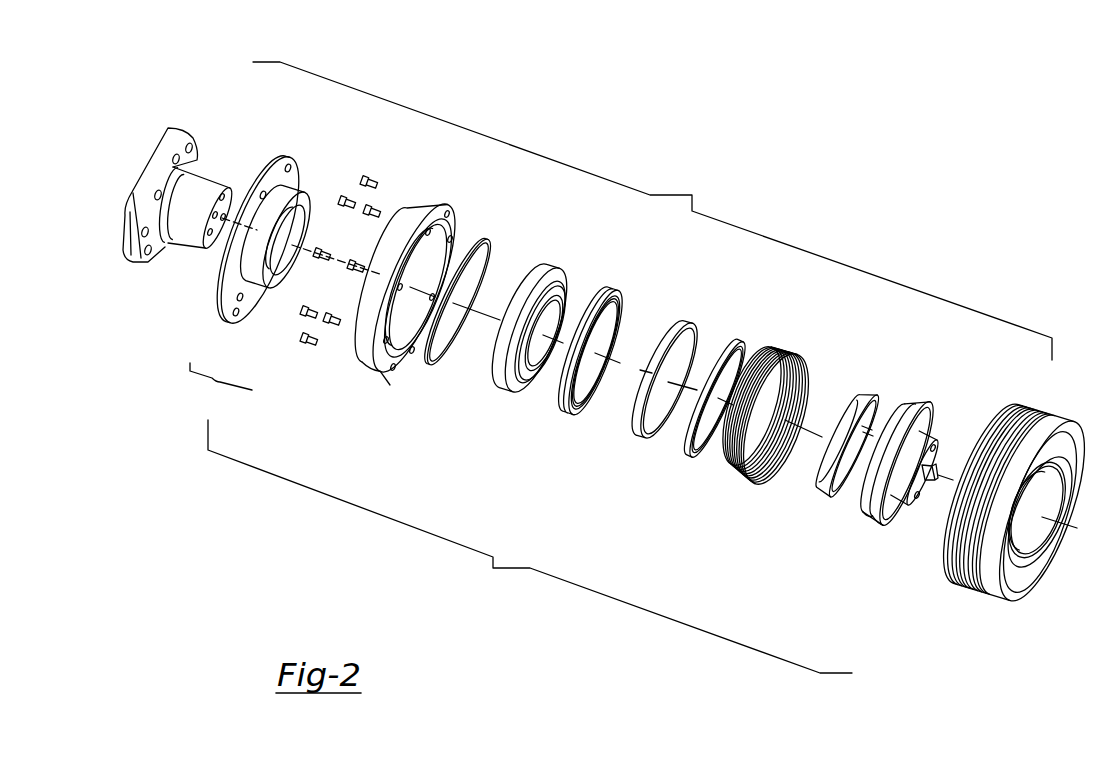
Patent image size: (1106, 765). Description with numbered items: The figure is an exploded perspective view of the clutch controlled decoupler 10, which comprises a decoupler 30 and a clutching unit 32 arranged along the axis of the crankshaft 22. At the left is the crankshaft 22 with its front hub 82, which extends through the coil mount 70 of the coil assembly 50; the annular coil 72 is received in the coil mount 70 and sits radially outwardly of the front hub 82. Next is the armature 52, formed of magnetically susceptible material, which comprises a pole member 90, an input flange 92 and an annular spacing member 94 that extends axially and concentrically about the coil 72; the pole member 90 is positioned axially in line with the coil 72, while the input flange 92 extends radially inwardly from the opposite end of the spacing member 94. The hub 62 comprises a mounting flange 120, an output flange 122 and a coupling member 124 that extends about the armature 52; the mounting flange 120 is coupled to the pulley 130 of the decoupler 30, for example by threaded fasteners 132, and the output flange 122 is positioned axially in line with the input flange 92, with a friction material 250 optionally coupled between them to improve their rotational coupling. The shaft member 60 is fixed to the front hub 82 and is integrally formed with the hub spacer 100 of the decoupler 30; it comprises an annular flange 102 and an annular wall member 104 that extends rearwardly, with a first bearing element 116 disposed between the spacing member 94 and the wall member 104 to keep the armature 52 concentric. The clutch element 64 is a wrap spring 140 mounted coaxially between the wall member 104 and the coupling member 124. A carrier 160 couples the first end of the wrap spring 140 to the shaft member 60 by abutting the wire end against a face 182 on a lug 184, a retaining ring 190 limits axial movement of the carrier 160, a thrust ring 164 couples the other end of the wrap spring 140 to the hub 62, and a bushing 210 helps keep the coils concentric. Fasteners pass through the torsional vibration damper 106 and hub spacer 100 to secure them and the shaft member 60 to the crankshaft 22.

The clutch controlled decoupler 10 is at (652, 211).
The crankshaft 22 is at (178, 130).
The decoupler 30 is at (997, 505).
The clutching unit 32 is at (530, 546).
The coil assembly 50 is at (221, 384).
The armature 52 is at (517, 331).
The shaft member 60 is at (882, 465).
The hub 62 is at (422, 203).
The clutch element 64 is at (760, 398).
The coil mount 70 is at (235, 313).
The annular coil 72 is at (257, 277).
The front hub 82 is at (203, 181).
The pole member 90 is at (560, 287).
The input flange 92 is at (503, 390).
The annular spacing member 94 is at (517, 380).
The hub spacer 100 is at (910, 507).
The annular flange 102 is at (932, 408).
The annular wall member 104 is at (872, 503).
The torsional vibration damper 106 is at (1015, 600).
The first bearing element 116 is at (818, 480).
The mounting flange 120 is at (396, 373).
The output flange 122 is at (394, 217).
The coupling member 124 is at (366, 343).
The pulley 130 is at (957, 580).
The threaded fasteners 132 is at (343, 202).
The wrap spring 140 is at (733, 466).
The carrier 160 is at (803, 358).
The thrust ring 164 is at (606, 285).
The face 182 is at (865, 512).
The lug 184 is at (863, 530).
The retaining ring 190 is at (727, 332).
The bushing 210 is at (633, 425).
The friction material 250 is at (488, 243).